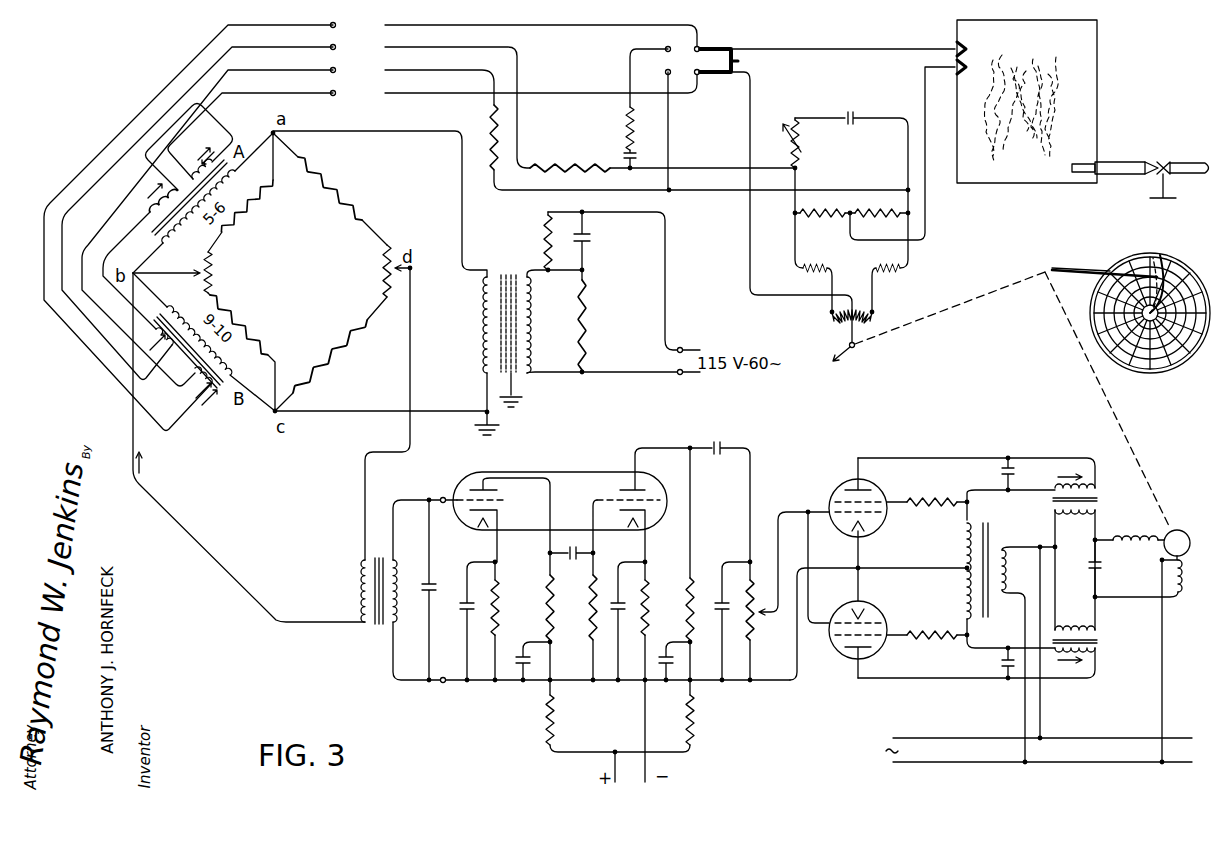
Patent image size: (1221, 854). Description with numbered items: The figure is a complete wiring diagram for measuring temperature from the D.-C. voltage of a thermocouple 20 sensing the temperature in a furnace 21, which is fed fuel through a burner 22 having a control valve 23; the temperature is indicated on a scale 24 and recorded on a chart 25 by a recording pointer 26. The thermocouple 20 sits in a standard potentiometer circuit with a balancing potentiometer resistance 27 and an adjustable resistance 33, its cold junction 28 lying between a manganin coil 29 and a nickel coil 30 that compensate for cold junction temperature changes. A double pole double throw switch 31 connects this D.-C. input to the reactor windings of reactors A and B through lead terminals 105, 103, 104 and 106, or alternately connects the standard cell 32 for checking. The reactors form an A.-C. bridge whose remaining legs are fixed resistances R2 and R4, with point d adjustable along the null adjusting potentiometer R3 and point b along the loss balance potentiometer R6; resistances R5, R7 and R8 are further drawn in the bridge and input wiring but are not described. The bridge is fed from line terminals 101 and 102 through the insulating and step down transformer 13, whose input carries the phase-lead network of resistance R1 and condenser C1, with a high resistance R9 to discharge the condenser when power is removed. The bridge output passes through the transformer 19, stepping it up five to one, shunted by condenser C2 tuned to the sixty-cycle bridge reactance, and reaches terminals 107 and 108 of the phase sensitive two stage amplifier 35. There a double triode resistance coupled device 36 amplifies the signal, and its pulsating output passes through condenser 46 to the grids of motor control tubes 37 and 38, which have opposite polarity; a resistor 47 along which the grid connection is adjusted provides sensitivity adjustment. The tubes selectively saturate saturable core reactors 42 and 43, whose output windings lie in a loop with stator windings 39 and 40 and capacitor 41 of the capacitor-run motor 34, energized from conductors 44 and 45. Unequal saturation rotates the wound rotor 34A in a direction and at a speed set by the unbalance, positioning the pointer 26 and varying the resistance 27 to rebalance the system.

The thermocouple lead wire 105 is at (372, 223).
The thermocouple lead wire 103 is at (296, 208).
The thermocouple lead wire 104 is at (288, 223).
The thermocouple lead wire 106 is at (434, 125).
The double pole double throw switch 31 is at (706, 48).
The standard cell 32 is at (643, 137).
The adjustable resistance 33 is at (804, 165).
The cold junction 28 is at (849, 213).
The manganin coil 29 is at (822, 226).
The nickel coil 30 is at (879, 226).
The balancing potentiometer resistance 27 is at (868, 329).
The thermocouple 20 is at (966, 62).
The furnace 21 is at (1002, 185).
The burner 22 is at (1112, 164).
The control valve 23 is at (1170, 164).
The scale 24 is at (1170, 255).
The chart 25 is at (1150, 370).
The recording pointer 26 is at (1079, 266).
The insulating and step down transformer 13 is at (474, 329).
The power supply terminal 101 is at (681, 348).
The power supply terminal 102 is at (681, 375).
The transformer 19 is at (352, 597).
The terminal 108 is at (441, 497).
The terminal 107 is at (442, 684).
The double triode resistance coupled device 36 is at (537, 474).
The condenser 46 is at (720, 491).
The resistor 47 is at (787, 595).
The phase sensitive two stage amplifier 35 is at (767, 719).
The motor control tube 37 is at (851, 483).
The motor control tube 38 is at (848, 660).
The saturable core reactor 42 is at (1087, 494).
The saturable core reactor 43 is at (990, 653).
The stator winding 39 is at (1129, 528).
The motor 34 is at (1150, 621).
The wound rotor 34A is at (1172, 530).
The stator winding 40 is at (1146, 659).
The capacitor 41 is at (1108, 568).
The conductor 44 is at (1044, 718).
The conductor 45 is at (1162, 718).
The resistance R1 is at (599, 321).
The fixed resistance R2 is at (330, 189).
The null adjusting potentiometer R3 is at (373, 271).
The fixed resistance R4 is at (331, 354).
The resistor R5 is at (242, 192).
The loss balance potentiometer R6 is at (222, 272).
The resistor R7 is at (241, 351).
The resistor R8 is at (481, 137).
The high resistance R9 is at (532, 241).
The condenser C1 is at (598, 241).
The condenser C2 is at (441, 590).